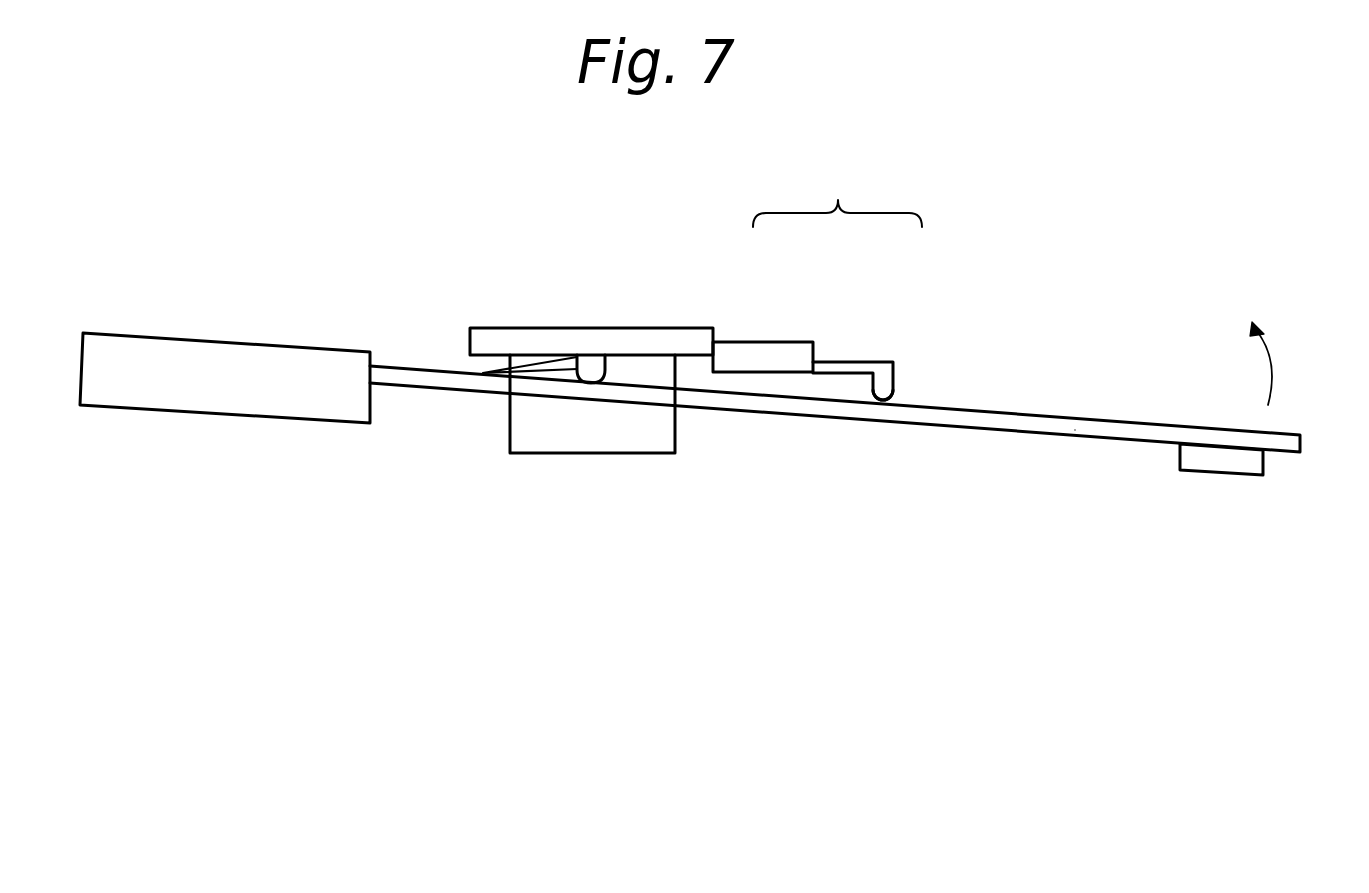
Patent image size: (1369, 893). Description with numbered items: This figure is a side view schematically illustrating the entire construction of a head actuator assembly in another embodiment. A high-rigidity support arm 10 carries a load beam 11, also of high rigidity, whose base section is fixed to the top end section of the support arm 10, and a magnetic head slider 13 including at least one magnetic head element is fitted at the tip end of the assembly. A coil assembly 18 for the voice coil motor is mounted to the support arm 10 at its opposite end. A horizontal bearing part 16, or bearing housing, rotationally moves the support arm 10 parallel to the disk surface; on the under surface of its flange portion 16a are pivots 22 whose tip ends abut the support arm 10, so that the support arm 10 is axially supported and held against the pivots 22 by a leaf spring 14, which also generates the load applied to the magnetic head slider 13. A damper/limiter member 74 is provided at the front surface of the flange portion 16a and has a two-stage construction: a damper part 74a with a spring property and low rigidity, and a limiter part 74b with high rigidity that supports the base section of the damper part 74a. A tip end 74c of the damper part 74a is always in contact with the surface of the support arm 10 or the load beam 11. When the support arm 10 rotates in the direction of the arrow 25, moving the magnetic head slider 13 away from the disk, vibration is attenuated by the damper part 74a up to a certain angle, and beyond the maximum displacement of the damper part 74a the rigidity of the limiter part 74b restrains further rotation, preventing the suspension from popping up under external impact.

The support arm 10 is at (822, 413).
The load beam 11 is at (1075, 430).
The magnetic head slider 13 is at (1223, 462).
The leaf spring 14 is at (483, 372).
The horizontal bearing part 16 is at (520, 432).
The flange portion 16a is at (668, 340).
The coil assembly 18 is at (135, 395).
The pivot 22 is at (586, 367).
The arrow 25 is at (1268, 368).
The damper/limiter member 74 is at (837, 195).
The damper part 74a is at (857, 362).
The limiter part 74b is at (793, 352).
The tip end 74c is at (893, 402).